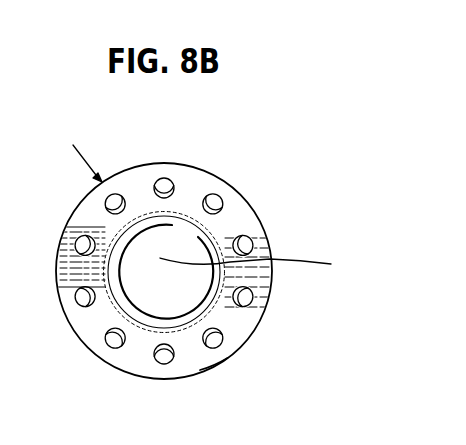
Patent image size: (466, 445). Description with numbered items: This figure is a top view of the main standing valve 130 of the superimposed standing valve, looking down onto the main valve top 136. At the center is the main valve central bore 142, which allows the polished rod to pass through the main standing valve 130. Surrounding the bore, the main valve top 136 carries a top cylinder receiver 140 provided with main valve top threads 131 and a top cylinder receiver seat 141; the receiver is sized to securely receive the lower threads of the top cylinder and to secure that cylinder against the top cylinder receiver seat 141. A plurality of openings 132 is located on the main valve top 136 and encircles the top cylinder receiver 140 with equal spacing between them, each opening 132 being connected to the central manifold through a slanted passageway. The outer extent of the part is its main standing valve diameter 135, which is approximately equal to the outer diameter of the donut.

The main standing valve 130 is at (188, 174).
The main valve top threads 131 is at (219, 233).
The openings 132 is at (216, 197).
The main standing valve diameter 135 is at (228, 358).
The main valve top 136 is at (133, 361).
The top cylinder receiver 140 is at (216, 266).
The top cylinder receiver seat 141 is at (122, 301).
The main valve central bore 142 is at (261, 268).